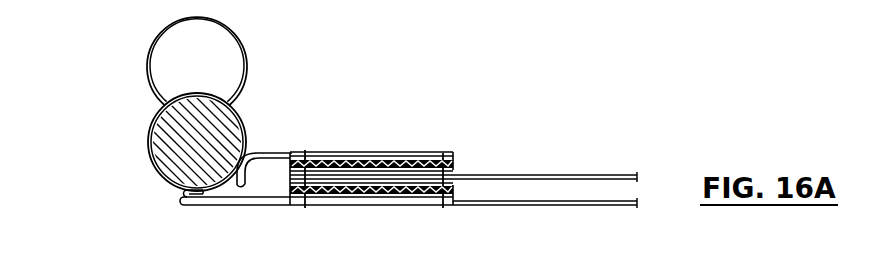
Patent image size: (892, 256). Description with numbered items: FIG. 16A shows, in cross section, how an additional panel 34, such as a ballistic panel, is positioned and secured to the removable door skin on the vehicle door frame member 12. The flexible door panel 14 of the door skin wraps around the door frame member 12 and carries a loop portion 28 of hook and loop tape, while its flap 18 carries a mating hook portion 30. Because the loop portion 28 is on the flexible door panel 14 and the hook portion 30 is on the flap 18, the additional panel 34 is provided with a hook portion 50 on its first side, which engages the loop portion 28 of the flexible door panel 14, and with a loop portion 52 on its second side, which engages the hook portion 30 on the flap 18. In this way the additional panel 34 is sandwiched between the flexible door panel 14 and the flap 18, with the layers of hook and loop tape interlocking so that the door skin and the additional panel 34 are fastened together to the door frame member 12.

The door frame member 12 is at (182, 145).
The flexible door panel 14 is at (588, 207).
The flap 18 is at (397, 152).
The loop portion 28 is at (463, 200).
The hook portion 30 is at (453, 155).
The additional panel 34 is at (583, 173).
The hook portion 50 is at (458, 187).
The loop portion 52 is at (453, 172).